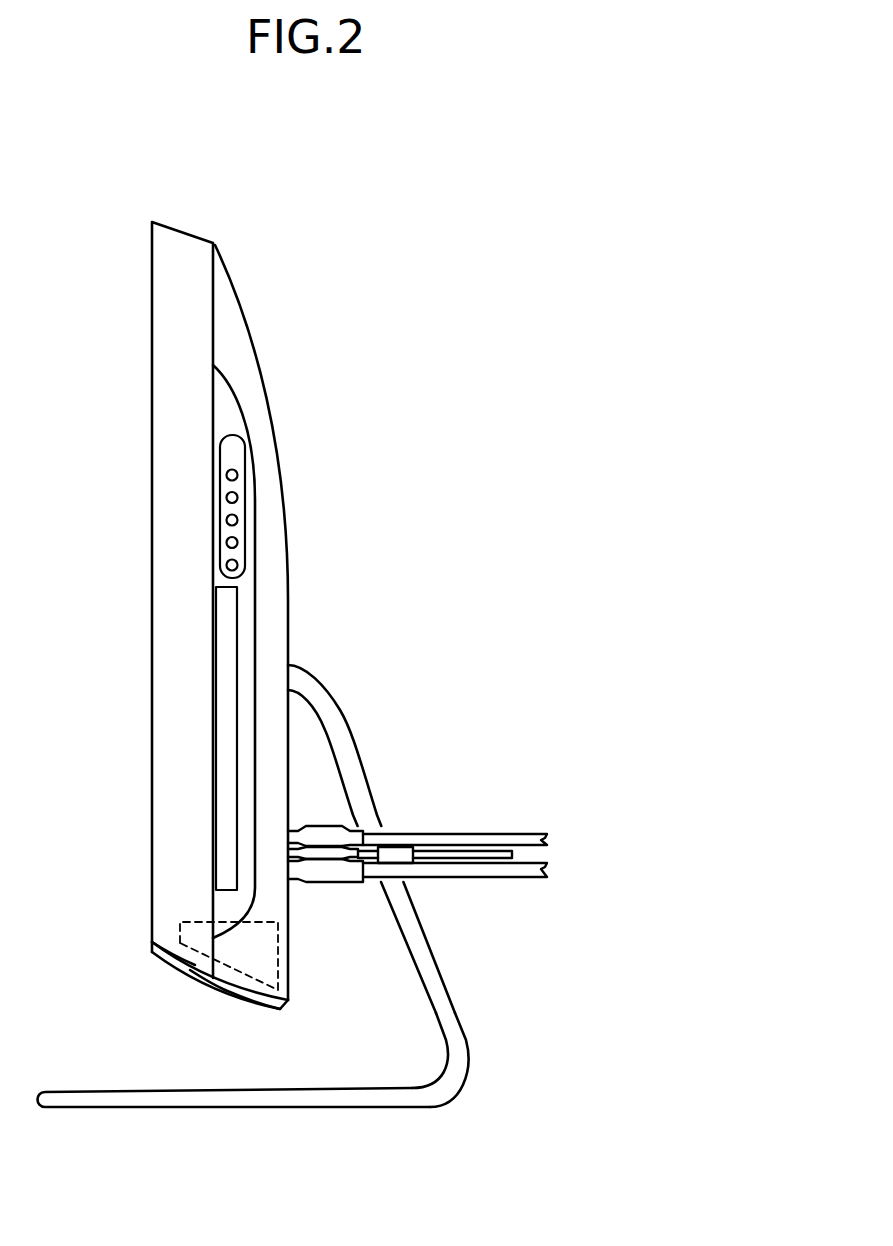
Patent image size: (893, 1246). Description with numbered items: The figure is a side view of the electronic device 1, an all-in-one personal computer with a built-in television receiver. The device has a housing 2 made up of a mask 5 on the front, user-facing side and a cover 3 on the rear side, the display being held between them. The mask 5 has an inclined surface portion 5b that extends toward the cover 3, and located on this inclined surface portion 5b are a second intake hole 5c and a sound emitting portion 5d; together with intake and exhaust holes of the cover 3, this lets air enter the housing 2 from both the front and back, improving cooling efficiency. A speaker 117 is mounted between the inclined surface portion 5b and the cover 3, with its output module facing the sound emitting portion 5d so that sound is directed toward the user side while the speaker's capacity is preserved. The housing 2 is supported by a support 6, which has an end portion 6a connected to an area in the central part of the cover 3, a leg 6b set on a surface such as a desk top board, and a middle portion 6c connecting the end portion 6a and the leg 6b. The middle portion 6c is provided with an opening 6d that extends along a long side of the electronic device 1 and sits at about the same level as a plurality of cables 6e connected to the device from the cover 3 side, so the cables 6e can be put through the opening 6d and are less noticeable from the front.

The electronic device 1 is at (259, 203).
The housing 2 is at (189, 198).
The cover 3 is at (270, 405).
The mask 5 is at (150, 518).
The inclined surface portion 5b is at (180, 970).
The second intake hole 5c is at (205, 987).
The sound emitting portion 5d is at (242, 1003).
The support 6 is at (307, 1107).
The end portion 6a is at (362, 760).
The leg 6b is at (132, 1107).
The middle portion 6c is at (455, 1013).
The opening 6d is at (388, 898).
The cables 6e is at (480, 833).
The speaker 117 is at (185, 935).